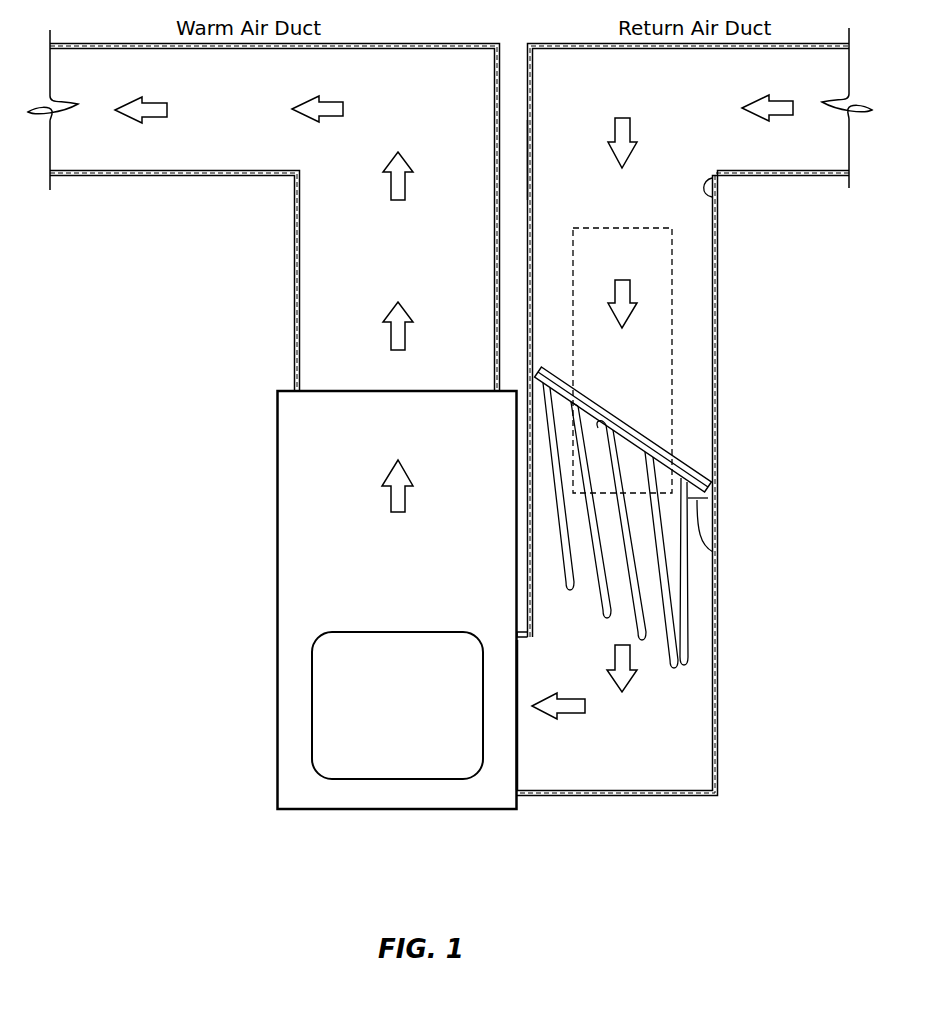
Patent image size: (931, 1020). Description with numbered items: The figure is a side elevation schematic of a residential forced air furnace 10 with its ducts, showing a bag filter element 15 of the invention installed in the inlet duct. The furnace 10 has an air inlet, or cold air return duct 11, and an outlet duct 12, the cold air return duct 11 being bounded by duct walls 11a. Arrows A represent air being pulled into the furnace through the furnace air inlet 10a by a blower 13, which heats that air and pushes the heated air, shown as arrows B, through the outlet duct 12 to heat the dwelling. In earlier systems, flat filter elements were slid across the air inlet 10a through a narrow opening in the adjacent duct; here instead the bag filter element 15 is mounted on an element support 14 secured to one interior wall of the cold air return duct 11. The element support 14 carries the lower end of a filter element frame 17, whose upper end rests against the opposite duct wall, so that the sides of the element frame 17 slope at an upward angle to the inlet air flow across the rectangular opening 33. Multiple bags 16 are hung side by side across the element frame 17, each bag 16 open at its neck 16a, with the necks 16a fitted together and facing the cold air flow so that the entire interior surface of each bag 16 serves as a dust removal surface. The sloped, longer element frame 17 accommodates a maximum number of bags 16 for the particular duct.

The forced air furnace 10 is at (208, 441).
The furnace air inlet 10a is at (518, 732).
The cold air return duct 11 is at (650, 201).
The return air duct wall 11a is at (533, 181).
The outlet duct 12 is at (325, 224).
The blower 13 is at (325, 717).
The element support 14 is at (713, 552).
The bag filter element 15 is at (655, 457).
The bag 16 is at (577, 568).
The bag neck 16a is at (600, 405).
The filter element frame 17 is at (599, 428).
The rectangular opening 33 is at (637, 261).
The inlet air flow arrows A is at (778, 103).
The heated air flow arrows B is at (392, 345).